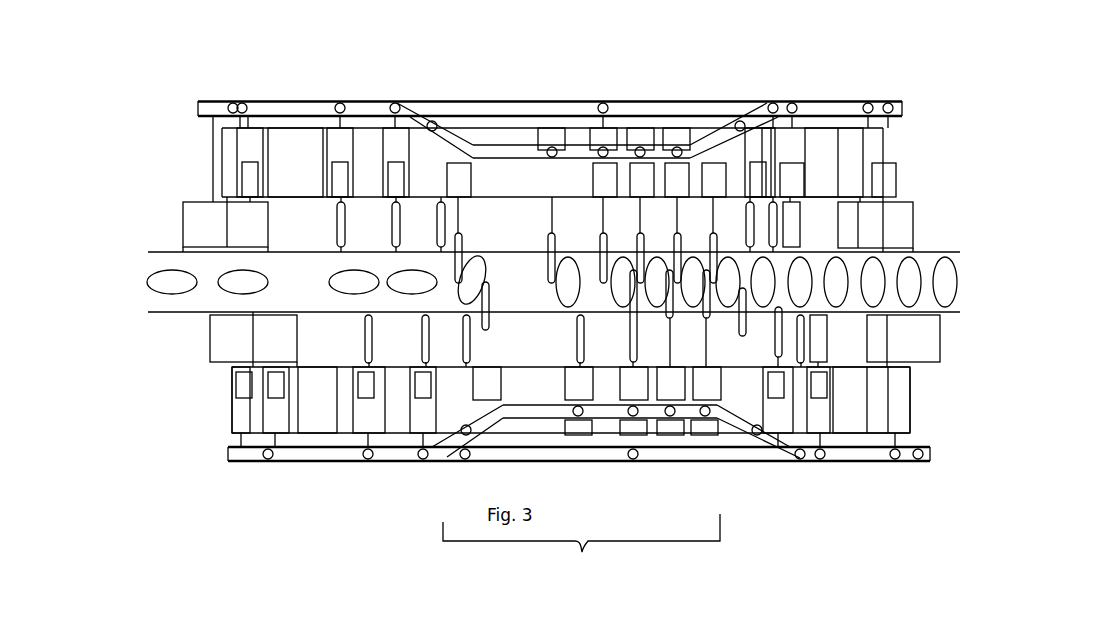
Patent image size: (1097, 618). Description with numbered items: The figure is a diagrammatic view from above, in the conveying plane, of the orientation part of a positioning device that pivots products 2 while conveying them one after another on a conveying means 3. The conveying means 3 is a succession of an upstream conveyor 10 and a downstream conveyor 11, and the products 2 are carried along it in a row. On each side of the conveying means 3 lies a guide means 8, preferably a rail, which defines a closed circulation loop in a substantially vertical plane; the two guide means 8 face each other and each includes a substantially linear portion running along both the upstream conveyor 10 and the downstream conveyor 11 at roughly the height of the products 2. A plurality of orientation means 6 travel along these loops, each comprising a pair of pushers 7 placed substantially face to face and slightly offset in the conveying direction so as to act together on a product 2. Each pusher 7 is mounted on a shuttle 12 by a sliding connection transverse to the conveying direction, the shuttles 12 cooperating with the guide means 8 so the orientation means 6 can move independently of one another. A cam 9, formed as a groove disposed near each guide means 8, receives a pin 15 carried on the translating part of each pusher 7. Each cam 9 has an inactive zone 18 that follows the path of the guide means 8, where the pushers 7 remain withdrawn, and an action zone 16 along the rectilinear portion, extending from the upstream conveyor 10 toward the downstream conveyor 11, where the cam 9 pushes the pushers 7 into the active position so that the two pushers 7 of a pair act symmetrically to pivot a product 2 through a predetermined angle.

The products 2 is at (239, 282).
The conveying means 3 is at (182, 323).
The orientation means 6 is at (627, 99).
The pusher 7 is at (490, 432).
The guide means 8 is at (301, 157).
The cam 9 is at (504, 155).
The upstream conveyor 10 is at (304, 292).
The downstream conveyor 11 is at (926, 262).
The shuttle 12 is at (646, 134).
The pin 15 is at (718, 152).
The action zone 16 is at (581, 552).
The inactive zone 18 is at (298, 463).